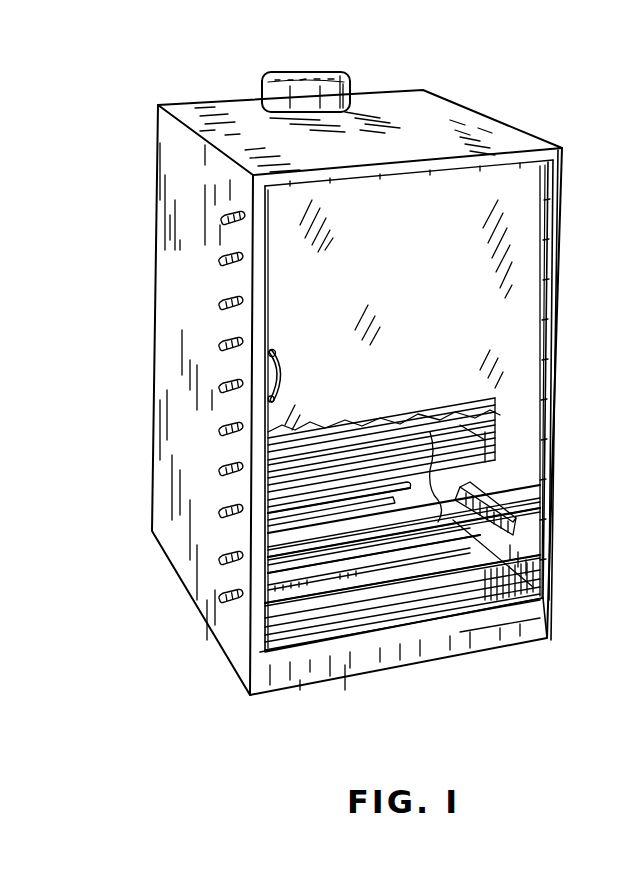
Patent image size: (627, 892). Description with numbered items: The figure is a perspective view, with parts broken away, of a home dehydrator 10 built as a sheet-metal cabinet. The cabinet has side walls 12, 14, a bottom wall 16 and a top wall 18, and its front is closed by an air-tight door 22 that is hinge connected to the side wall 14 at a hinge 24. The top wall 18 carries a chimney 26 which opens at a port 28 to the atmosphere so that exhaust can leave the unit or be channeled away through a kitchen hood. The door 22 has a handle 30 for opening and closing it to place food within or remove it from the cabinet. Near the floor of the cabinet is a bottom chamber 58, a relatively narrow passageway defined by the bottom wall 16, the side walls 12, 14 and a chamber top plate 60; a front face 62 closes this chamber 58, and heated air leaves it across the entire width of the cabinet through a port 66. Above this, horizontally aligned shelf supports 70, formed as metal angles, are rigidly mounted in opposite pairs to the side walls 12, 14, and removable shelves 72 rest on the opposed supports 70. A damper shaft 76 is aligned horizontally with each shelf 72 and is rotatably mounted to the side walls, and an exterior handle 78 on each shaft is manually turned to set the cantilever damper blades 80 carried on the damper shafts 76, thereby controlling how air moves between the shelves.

The dehydrator 10 is at (498, 102).
The side wall 12 is at (188, 304).
The side wall 14 is at (562, 262).
The bottom wall 16 is at (452, 607).
The top wall 18 is at (404, 140).
The front air-tight door 22 is at (430, 253).
The hinge 24 is at (548, 344).
The chimney 26 is at (352, 90).
The port 28 is at (300, 72).
The handle 30 is at (284, 358).
The bottom chamber 58 is at (410, 605).
The chamber top plate 60 is at (342, 592).
The front face 62 is at (550, 606).
The port 66 is at (496, 610).
The shelf supports 70 is at (512, 488).
The removable shelves 72 is at (420, 410).
The damper shaft 76 is at (318, 540).
The exterior handle 78 is at (228, 256).
The cantilever damper blades 80 is at (338, 548).